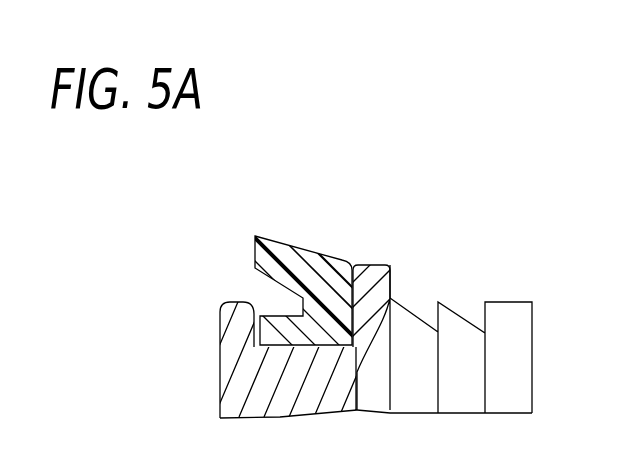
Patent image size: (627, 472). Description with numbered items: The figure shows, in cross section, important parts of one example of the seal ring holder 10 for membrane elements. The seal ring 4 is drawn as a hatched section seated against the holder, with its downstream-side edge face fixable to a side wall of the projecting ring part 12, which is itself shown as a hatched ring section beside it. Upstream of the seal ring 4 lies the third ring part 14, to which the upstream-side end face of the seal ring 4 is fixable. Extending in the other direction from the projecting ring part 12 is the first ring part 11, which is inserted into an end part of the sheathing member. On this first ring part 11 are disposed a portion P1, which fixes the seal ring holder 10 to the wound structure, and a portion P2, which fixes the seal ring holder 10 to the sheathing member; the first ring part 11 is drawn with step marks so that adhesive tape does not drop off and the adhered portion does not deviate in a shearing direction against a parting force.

The seal ring 4 is at (285, 247).
The seal ring holder 10 is at (490, 192).
The first ring part 11 is at (548, 328).
The projecting ring part 12 is at (363, 262).
The third ring part 14 is at (221, 297).
The portion fixing the seal ring holder and the wound structure P1 is at (533, 257).
The portion fixing the seal ring holder and the sheathing member P2 is at (395, 219).